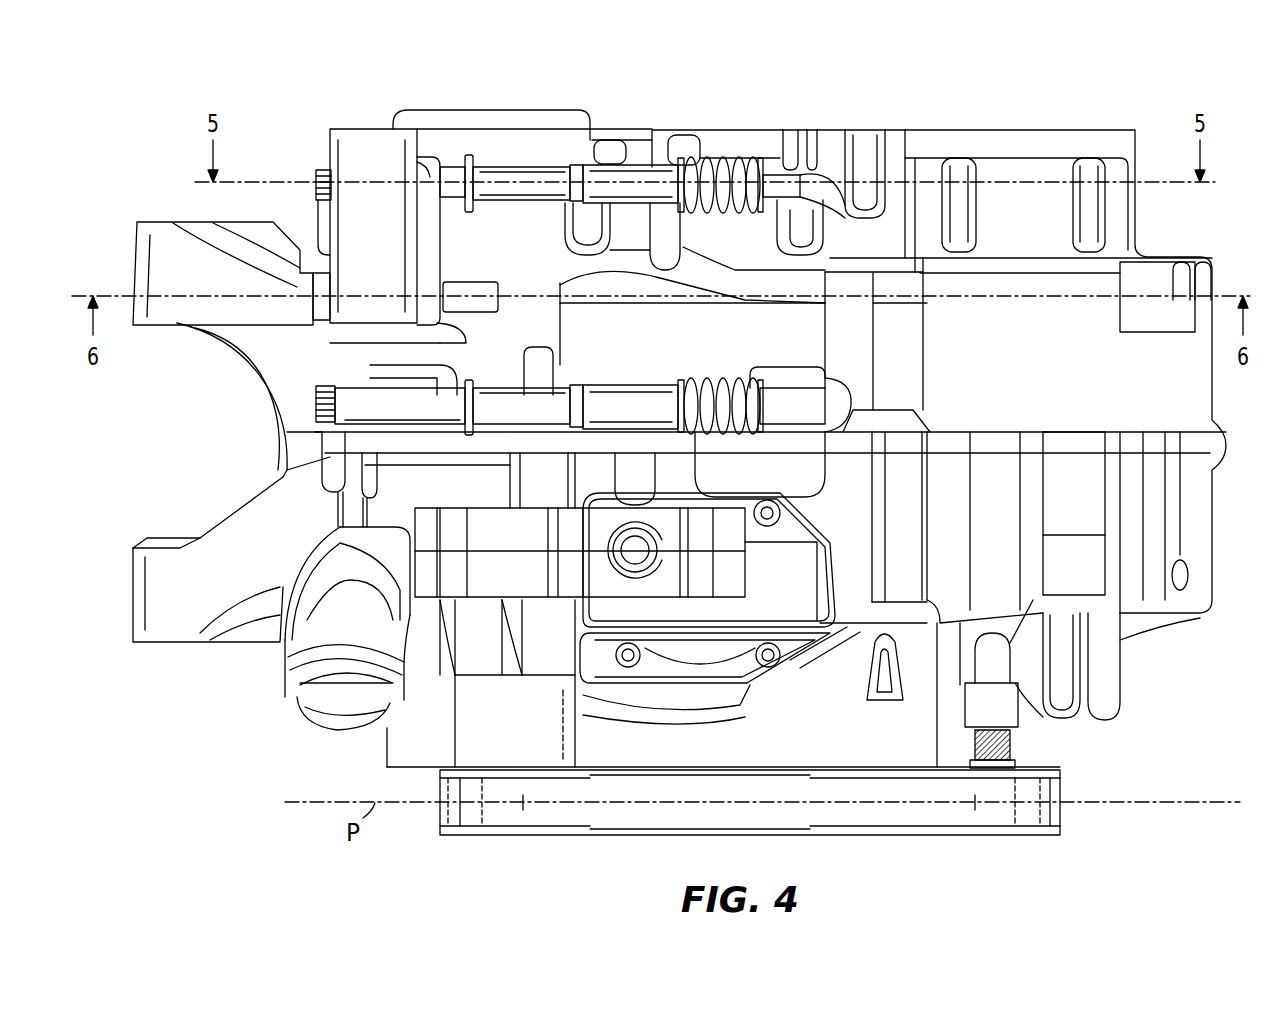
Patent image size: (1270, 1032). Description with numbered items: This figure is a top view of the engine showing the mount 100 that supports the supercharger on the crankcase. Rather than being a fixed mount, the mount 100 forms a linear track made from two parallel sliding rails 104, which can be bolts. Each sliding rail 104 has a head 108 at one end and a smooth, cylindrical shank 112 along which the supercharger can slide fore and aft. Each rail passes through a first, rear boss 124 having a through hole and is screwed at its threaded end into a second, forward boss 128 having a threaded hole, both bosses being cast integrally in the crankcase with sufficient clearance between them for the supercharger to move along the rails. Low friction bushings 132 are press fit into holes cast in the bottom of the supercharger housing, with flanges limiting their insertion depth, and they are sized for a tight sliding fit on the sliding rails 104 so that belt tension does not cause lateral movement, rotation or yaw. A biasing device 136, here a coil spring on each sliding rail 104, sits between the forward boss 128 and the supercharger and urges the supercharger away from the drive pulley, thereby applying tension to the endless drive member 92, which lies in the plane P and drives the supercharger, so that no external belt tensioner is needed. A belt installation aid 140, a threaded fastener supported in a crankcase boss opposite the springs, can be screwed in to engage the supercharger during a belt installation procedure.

The mount 100 is at (257, 74).
The sliding rails 104 is at (314, 176).
The head 108 is at (323, 170).
The shank 112 is at (577, 172).
The first (rear) boss 124 is at (803, 175).
The second (forward) boss 128 is at (373, 416).
The bushings 132 is at (622, 172).
The biasing device 136 is at (697, 170).
The belt installation aid 140 is at (313, 288).
The endless drive member 92 is at (625, 826).